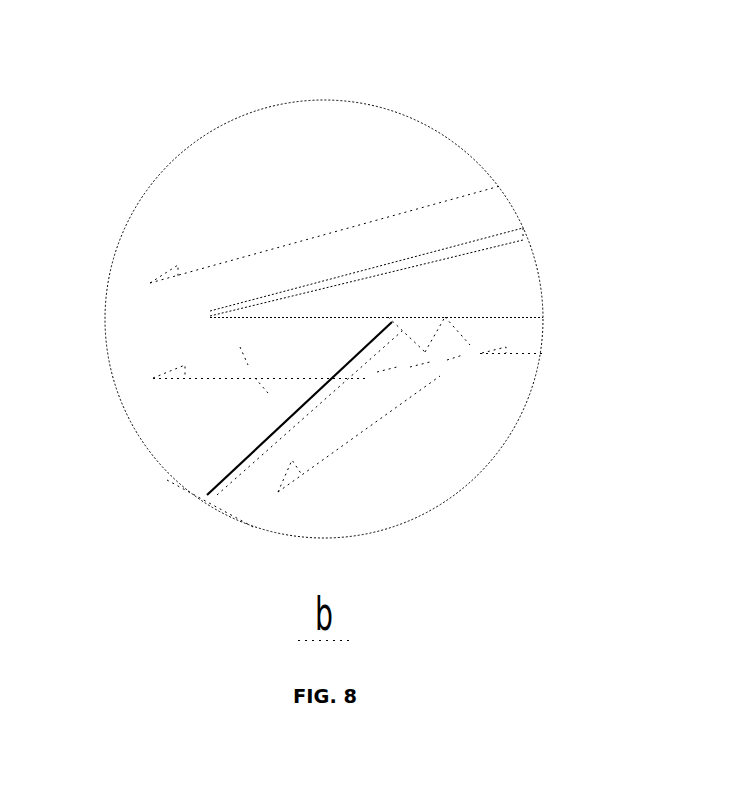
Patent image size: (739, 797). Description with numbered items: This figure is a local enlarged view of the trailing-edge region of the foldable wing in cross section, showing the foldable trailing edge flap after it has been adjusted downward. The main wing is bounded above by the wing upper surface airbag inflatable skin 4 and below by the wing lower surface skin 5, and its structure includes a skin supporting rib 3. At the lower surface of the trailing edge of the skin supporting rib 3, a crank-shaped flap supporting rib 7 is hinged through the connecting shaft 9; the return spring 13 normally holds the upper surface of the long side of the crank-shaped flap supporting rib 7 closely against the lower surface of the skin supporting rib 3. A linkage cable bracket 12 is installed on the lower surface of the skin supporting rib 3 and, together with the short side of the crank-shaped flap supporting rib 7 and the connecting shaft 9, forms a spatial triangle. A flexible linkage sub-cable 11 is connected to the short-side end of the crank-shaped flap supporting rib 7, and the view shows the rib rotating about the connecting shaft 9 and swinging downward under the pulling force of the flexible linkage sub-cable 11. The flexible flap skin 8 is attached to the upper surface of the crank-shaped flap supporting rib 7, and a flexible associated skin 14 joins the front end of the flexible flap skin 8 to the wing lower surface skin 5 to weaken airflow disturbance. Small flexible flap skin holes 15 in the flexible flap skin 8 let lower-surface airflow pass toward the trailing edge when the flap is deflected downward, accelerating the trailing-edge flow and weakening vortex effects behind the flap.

The skin supporting rib 3 is at (533, 260).
The wing upper surface airbag inflatable skin 4 is at (480, 233).
The wing lower surface skin 5 is at (543, 318).
The crank-shaped flap supporting rib 7 is at (207, 497).
The flexible flap skin 8 is at (245, 462).
The connecting shaft 9 is at (390, 320).
The flexible linkage sub-cable 11 is at (428, 352).
The linkage cable bracket 12 is at (445, 320).
The return spring 13 is at (380, 318).
The flexible associated skin 14 is at (395, 320).
The flexible flap skin hole 15 is at (285, 325).